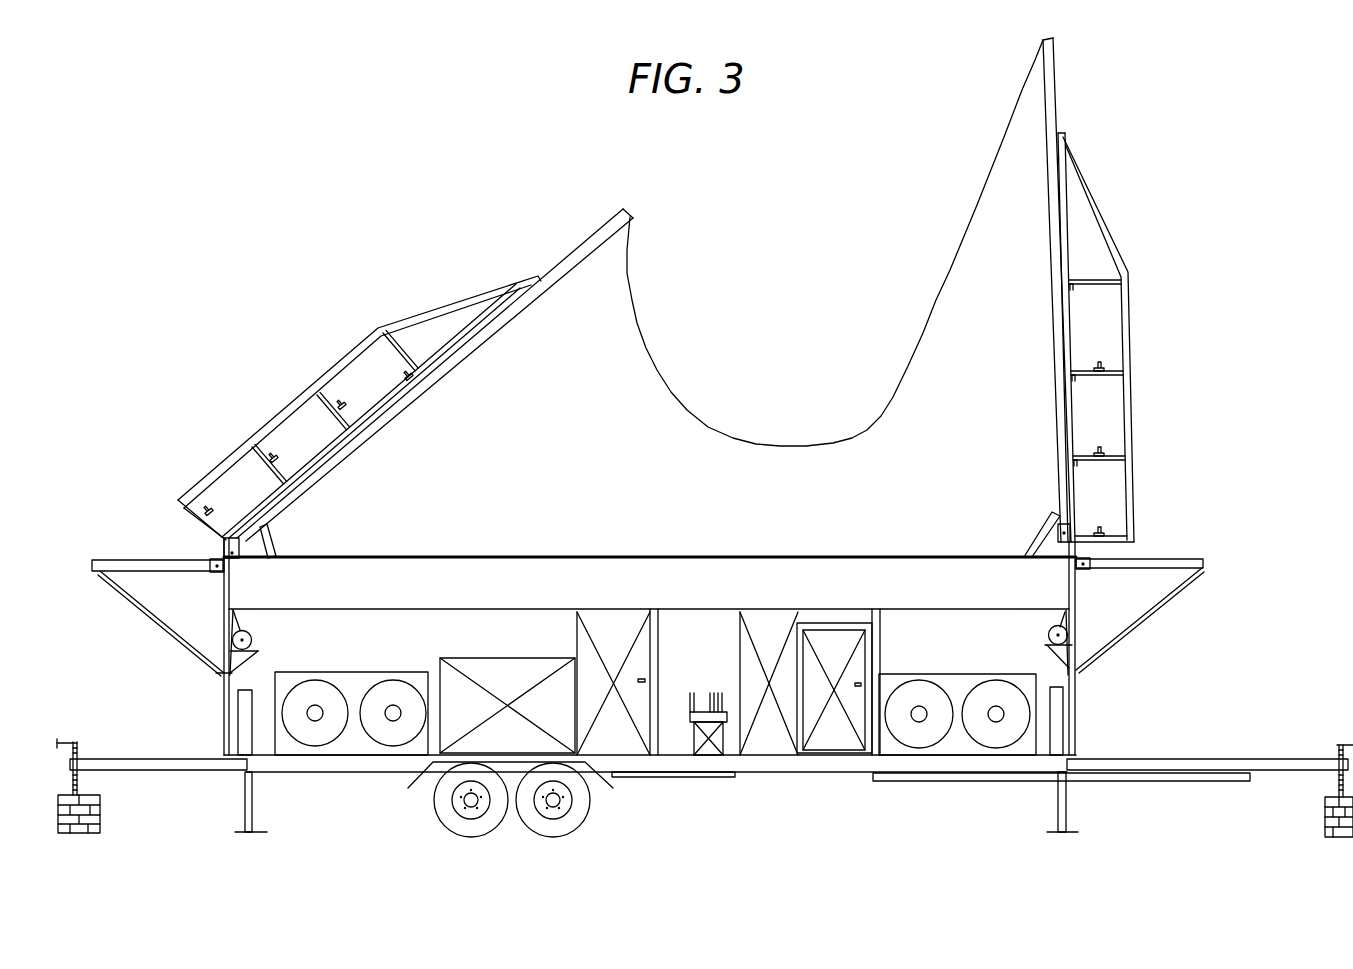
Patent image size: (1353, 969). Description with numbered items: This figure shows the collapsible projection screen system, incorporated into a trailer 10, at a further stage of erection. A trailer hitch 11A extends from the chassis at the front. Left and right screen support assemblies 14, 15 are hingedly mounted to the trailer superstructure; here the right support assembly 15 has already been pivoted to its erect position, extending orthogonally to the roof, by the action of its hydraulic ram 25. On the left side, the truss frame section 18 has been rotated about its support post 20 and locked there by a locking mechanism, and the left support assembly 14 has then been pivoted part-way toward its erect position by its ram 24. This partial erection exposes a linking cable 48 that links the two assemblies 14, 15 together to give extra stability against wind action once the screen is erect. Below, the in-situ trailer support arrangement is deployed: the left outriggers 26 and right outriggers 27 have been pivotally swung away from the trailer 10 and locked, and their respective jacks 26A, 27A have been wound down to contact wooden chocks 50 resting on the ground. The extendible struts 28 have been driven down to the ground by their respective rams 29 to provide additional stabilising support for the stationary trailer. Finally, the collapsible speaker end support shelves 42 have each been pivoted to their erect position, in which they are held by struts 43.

The trailer 10 is at (687, 810).
The trailer hitch 11A is at (1143, 777).
The left screen support assembly 14 is at (352, 438).
The right screen support assembly 15 is at (1062, 350).
The truss frame section 18 is at (352, 357).
The support post 20 is at (403, 405).
The hydraulic ram 24 is at (273, 548).
The hydraulic ram 25 is at (1035, 540).
The left outriggers 26 is at (150, 763).
The jack 26A is at (83, 780).
The right outriggers 27 is at (1220, 763).
The jack 27A is at (1335, 782).
The extendible struts 28 is at (257, 808).
The ram 29 is at (247, 720).
The collapsible speaker end support shelves 42 is at (142, 560).
The struts 43 is at (150, 613).
The linking cable 48 is at (742, 438).
The wooden chocks 50 is at (103, 837).